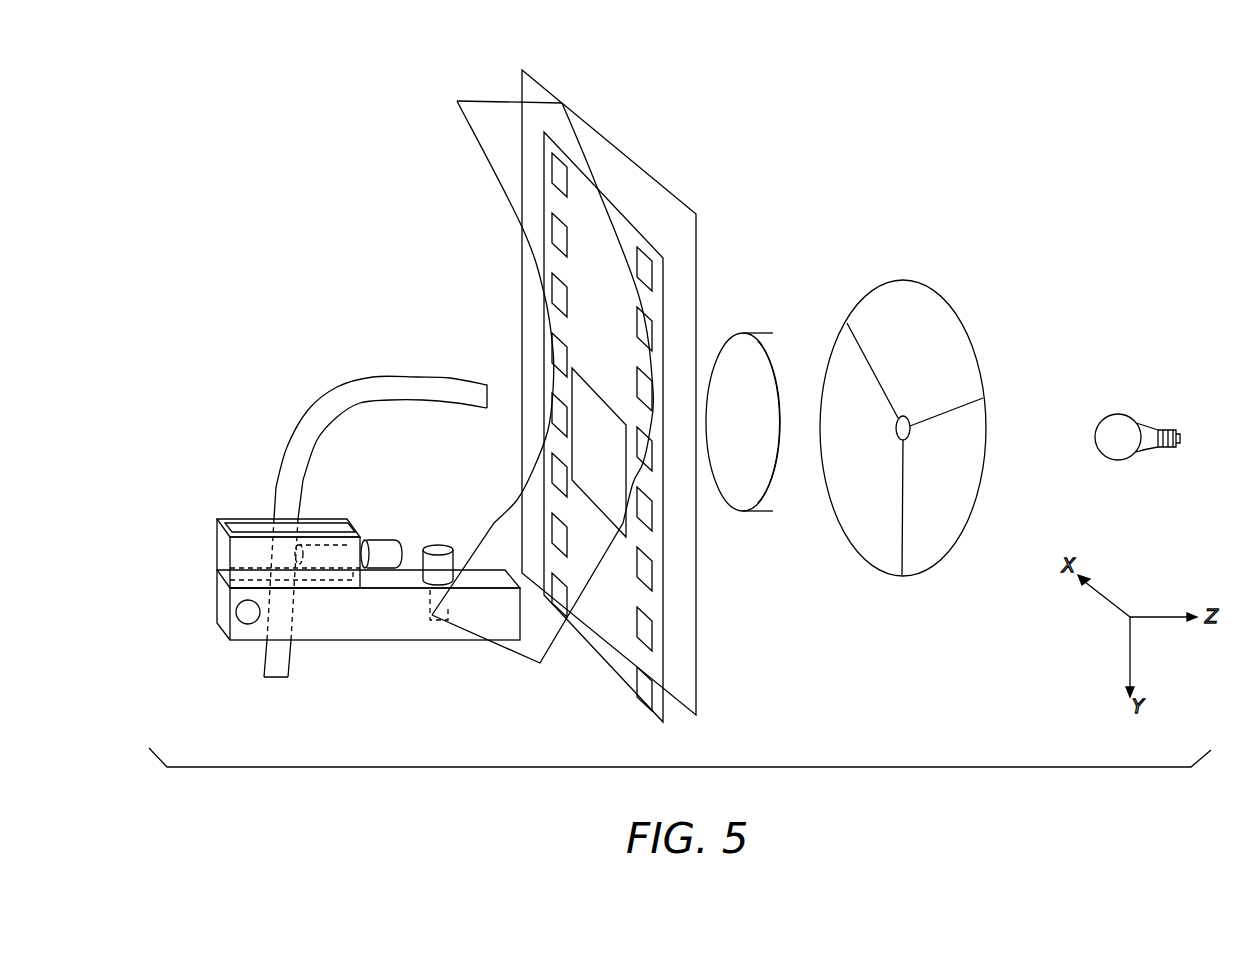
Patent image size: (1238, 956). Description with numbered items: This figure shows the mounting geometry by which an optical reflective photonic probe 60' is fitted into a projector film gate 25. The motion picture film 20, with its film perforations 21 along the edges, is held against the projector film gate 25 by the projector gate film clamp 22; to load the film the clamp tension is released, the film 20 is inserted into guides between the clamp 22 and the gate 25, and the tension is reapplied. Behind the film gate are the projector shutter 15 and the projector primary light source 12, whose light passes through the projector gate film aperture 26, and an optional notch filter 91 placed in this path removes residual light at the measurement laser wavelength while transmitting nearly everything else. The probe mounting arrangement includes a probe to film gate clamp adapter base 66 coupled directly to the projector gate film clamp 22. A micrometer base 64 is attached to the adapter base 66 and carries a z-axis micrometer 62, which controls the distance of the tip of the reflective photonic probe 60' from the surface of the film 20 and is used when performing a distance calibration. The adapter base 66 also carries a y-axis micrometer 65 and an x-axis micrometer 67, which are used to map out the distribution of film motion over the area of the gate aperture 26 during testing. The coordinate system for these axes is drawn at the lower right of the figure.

The projector primary light source 12 is at (1150, 425).
The projector shutter 15 is at (961, 320).
The motion picture film 20 is at (653, 707).
The film perforations 21 is at (633, 679).
The projector gate film clamp 22 is at (540, 667).
The projector film gate 25 is at (608, 141).
The projector gate film aperture 26 is at (615, 467).
The optical reflective photonic probe 60' is at (375, 505).
The z-axis micrometer 62 is at (393, 538).
The micrometer base 64 is at (328, 518).
The y-axis micrometer 65 is at (440, 549).
The probe to film gate clamp adapter base 66 is at (433, 641).
The x-axis micrometer 67 is at (250, 618).
The notch filter 91 is at (768, 333).